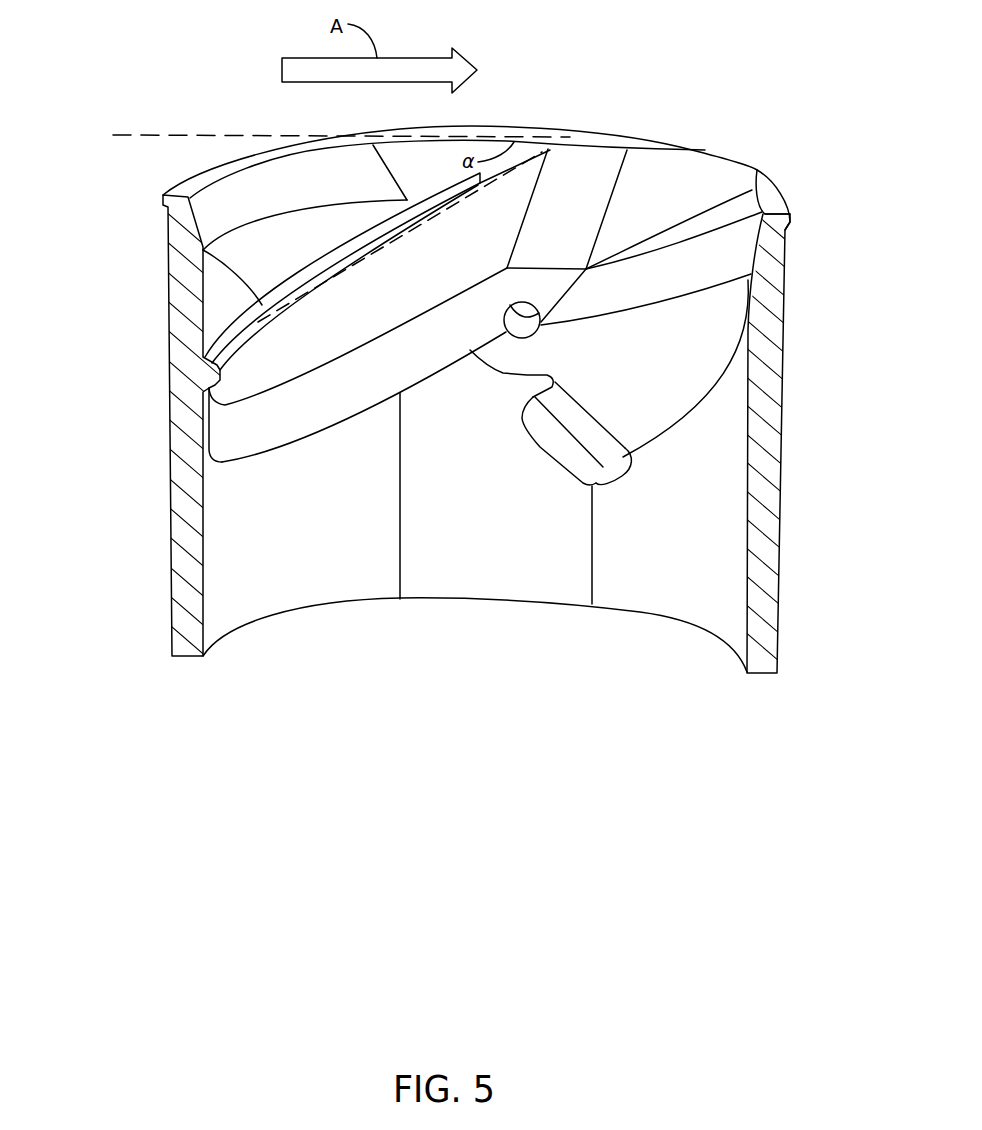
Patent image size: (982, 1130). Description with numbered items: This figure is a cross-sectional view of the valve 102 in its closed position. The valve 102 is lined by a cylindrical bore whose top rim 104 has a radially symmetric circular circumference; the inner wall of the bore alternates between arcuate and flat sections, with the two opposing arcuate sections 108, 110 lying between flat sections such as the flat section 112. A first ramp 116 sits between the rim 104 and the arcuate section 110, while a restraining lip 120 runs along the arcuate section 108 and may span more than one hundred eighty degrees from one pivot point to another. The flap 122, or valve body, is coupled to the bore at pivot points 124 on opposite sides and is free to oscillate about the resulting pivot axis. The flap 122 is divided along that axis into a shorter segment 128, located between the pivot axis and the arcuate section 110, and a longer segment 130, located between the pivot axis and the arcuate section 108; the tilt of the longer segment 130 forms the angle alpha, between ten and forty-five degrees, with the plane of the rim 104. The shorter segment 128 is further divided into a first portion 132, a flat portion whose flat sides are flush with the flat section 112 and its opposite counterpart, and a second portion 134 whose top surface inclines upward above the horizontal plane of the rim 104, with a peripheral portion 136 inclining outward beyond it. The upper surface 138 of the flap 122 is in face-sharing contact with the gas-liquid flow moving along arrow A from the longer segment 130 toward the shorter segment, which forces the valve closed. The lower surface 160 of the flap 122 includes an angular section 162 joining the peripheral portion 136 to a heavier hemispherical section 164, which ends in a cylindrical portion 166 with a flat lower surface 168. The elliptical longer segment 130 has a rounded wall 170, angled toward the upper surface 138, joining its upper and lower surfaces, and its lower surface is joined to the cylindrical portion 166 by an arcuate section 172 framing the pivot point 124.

The valve 102 is at (606, 70).
The top rim 104 is at (298, 145).
The arcuate section 108 is at (315, 572).
The arcuate section 110 is at (747, 467).
The flat section 112 is at (485, 572).
The first ramp 116 is at (790, 218).
The restraining lip 120 is at (260, 303).
The flap 122 is at (375, 428).
The pivot point 124 is at (538, 325).
The shorter segment 128 is at (627, 125).
The longer segment 130 is at (373, 275).
The first portion 132 is at (592, 163).
The second portion 134 is at (678, 163).
The peripheral portion 136 is at (757, 173).
The upper surface 138 is at (503, 238).
The lower surface 160 is at (684, 448).
The angular section 162 is at (733, 247).
The hemispherical section 164 is at (697, 343).
The cylindrical portion 166 is at (630, 457).
The flat lower surface 168 is at (560, 440).
The rounded wall 170 is at (257, 425).
The arcuate section 172 is at (515, 362).